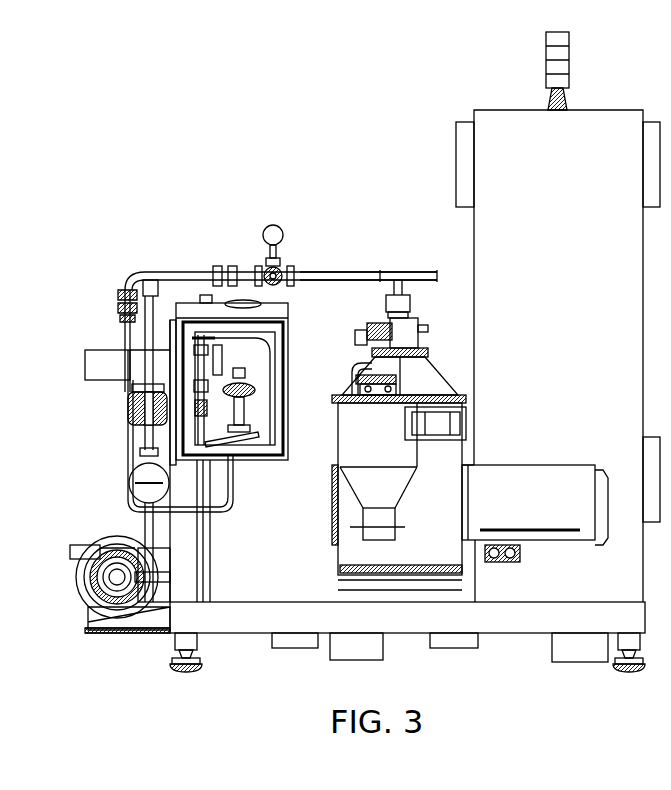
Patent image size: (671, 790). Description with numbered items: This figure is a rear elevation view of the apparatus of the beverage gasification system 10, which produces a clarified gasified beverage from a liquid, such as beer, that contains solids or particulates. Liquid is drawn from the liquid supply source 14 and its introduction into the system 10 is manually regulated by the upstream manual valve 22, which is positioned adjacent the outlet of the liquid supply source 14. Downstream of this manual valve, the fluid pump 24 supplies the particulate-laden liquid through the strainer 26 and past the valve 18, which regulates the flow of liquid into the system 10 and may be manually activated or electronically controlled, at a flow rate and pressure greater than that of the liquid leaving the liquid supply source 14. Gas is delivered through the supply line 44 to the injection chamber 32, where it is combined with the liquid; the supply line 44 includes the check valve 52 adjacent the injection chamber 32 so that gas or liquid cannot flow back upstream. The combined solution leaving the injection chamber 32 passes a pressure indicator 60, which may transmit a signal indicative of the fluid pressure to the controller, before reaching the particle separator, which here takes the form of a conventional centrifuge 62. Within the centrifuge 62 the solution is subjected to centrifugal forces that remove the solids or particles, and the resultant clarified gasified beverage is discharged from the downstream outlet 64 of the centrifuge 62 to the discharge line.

The system 10 is at (264, 127).
The liquid supply source 14 is at (118, 578).
The valve 18 is at (128, 412).
The upstream manual valve 22 is at (80, 546).
The fluid pump 24 is at (103, 540).
The strainer 26 is at (130, 478).
The injection chamber 32 is at (178, 270).
The supply line 44 is at (247, 378).
The check valve 52 is at (365, 270).
The pressure indicator 60 is at (285, 240).
The centrifuge 62 is at (425, 370).
The downstream outlet 64 is at (350, 341).